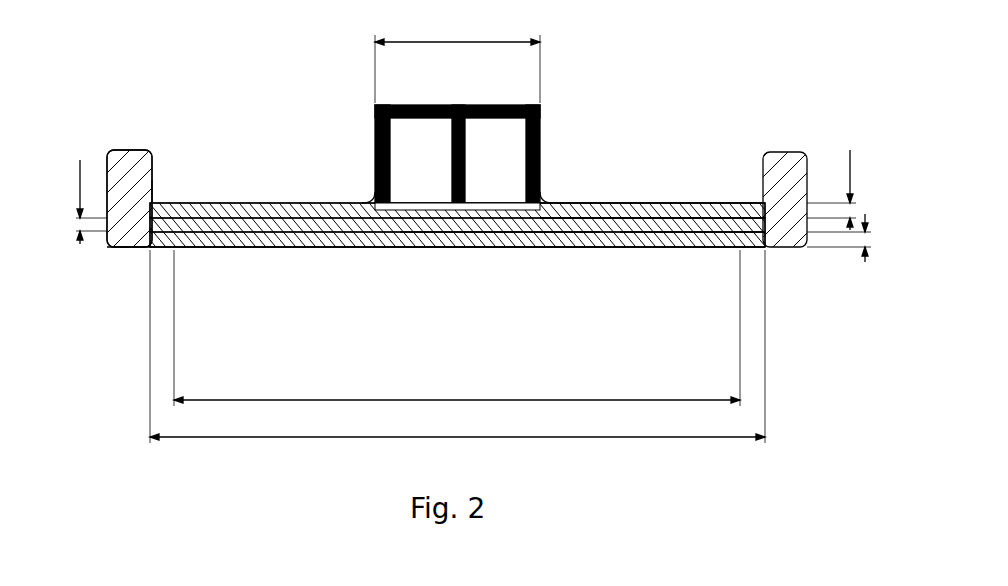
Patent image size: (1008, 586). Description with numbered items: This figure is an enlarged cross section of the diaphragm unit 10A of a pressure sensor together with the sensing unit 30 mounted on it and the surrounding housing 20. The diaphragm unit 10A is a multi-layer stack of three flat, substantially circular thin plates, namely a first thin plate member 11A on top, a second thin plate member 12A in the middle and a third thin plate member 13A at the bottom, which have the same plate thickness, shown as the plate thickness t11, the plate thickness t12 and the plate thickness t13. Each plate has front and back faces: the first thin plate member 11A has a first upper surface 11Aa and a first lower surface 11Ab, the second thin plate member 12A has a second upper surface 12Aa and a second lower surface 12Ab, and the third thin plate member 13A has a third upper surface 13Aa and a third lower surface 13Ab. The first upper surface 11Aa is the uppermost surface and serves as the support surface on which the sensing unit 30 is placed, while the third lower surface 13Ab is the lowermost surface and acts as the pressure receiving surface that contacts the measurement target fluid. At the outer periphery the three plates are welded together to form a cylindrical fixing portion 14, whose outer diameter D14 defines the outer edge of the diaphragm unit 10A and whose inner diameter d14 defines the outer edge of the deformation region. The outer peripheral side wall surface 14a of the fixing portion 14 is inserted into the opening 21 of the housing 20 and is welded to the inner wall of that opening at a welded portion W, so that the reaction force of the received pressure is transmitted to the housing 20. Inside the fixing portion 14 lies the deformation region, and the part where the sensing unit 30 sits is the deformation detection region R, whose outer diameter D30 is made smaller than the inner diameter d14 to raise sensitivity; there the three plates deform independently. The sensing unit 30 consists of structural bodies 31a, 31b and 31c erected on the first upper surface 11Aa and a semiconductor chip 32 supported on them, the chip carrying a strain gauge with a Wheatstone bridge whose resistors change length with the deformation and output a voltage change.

The diaphragm unit 10A is at (402, 250).
The first thin plate member 11A is at (160, 212).
The first upper surface 11Aa is at (643, 202).
The first lower surface 11Ab is at (657, 218).
The second thin plate member 12A is at (168, 226).
The second upper surface 12Aa is at (628, 220).
The second lower surface 12Ab is at (720, 232).
The third thin plate member 13A is at (176, 240).
The third upper surface 13Aa is at (490, 234).
The third lower surface 13Ab is at (523, 248).
The fixing portion 14 is at (180, 250).
The outer peripheral side wall surface 14a is at (151, 198).
The housing 20 is at (118, 151).
The opening 21 is at (153, 165).
The sensing unit 30 is at (393, 142).
The structural body 31a is at (378, 137).
The structural body 31b is at (450, 163).
The structural body 31c is at (527, 193).
The semiconductor chip 32 is at (372, 108).
The deformation detection region R is at (553, 200).
The welded portion W is at (147, 249).
The outer diameter of the deformation detection region D30 is at (457, 55).
The inner diameter of the fixing portion d14 is at (457, 328).
The outer diameter of the fixing portion D14 is at (457, 346).
The plate thickness of the first thin plate member t11 is at (831, 188).
The plate thickness of the second thin plate member t12 is at (75, 198).
The plate thickness of the third thin plate member t13 is at (839, 259).